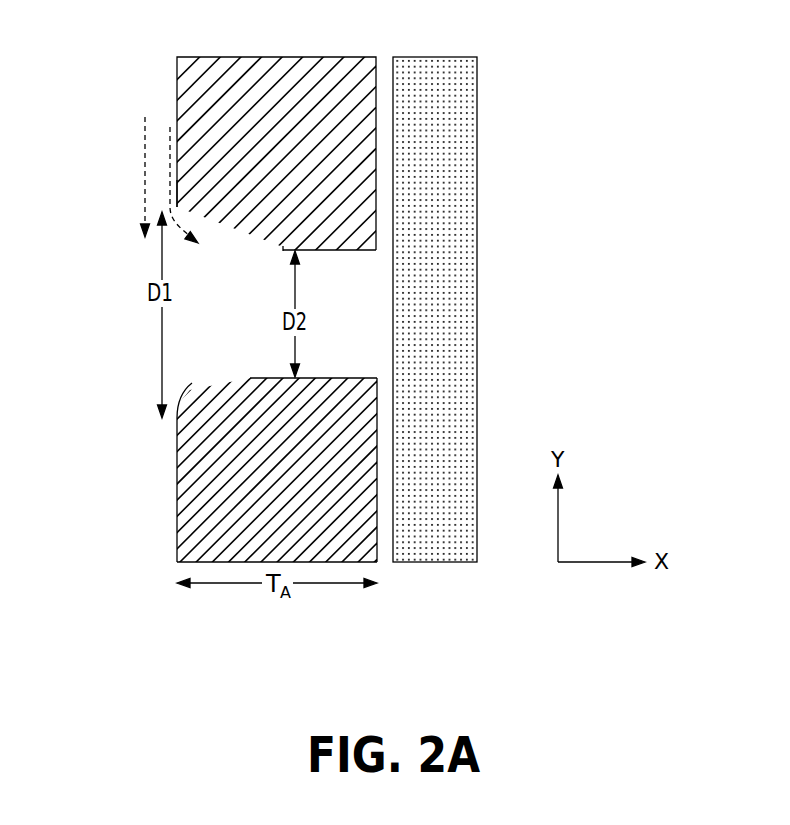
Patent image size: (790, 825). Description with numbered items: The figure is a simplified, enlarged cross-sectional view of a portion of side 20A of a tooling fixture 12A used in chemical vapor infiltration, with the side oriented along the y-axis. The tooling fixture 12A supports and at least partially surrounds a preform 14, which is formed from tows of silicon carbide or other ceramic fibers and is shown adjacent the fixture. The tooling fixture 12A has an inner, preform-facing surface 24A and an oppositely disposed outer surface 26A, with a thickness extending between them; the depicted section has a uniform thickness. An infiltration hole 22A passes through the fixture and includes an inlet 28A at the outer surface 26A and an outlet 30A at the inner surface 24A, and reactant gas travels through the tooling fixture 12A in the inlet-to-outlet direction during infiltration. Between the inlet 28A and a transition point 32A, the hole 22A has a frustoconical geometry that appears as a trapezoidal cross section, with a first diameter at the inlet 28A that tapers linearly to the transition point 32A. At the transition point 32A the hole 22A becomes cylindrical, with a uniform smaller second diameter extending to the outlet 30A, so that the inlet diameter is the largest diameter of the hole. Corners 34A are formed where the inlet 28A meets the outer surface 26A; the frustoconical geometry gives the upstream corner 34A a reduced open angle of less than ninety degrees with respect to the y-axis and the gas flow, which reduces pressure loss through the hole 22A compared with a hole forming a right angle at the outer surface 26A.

The tooling fixture 12A is at (130, 101).
The preform 14 is at (446, 348).
The side 20A is at (313, 517).
The infiltration hole 22A is at (265, 339).
The inner surface 24A is at (379, 555).
The outer surface 26A is at (175, 470).
The inlet 28A is at (192, 383).
The outlet 30A is at (377, 252).
The transition point 32A is at (283, 252).
The corner 34A is at (177, 207).